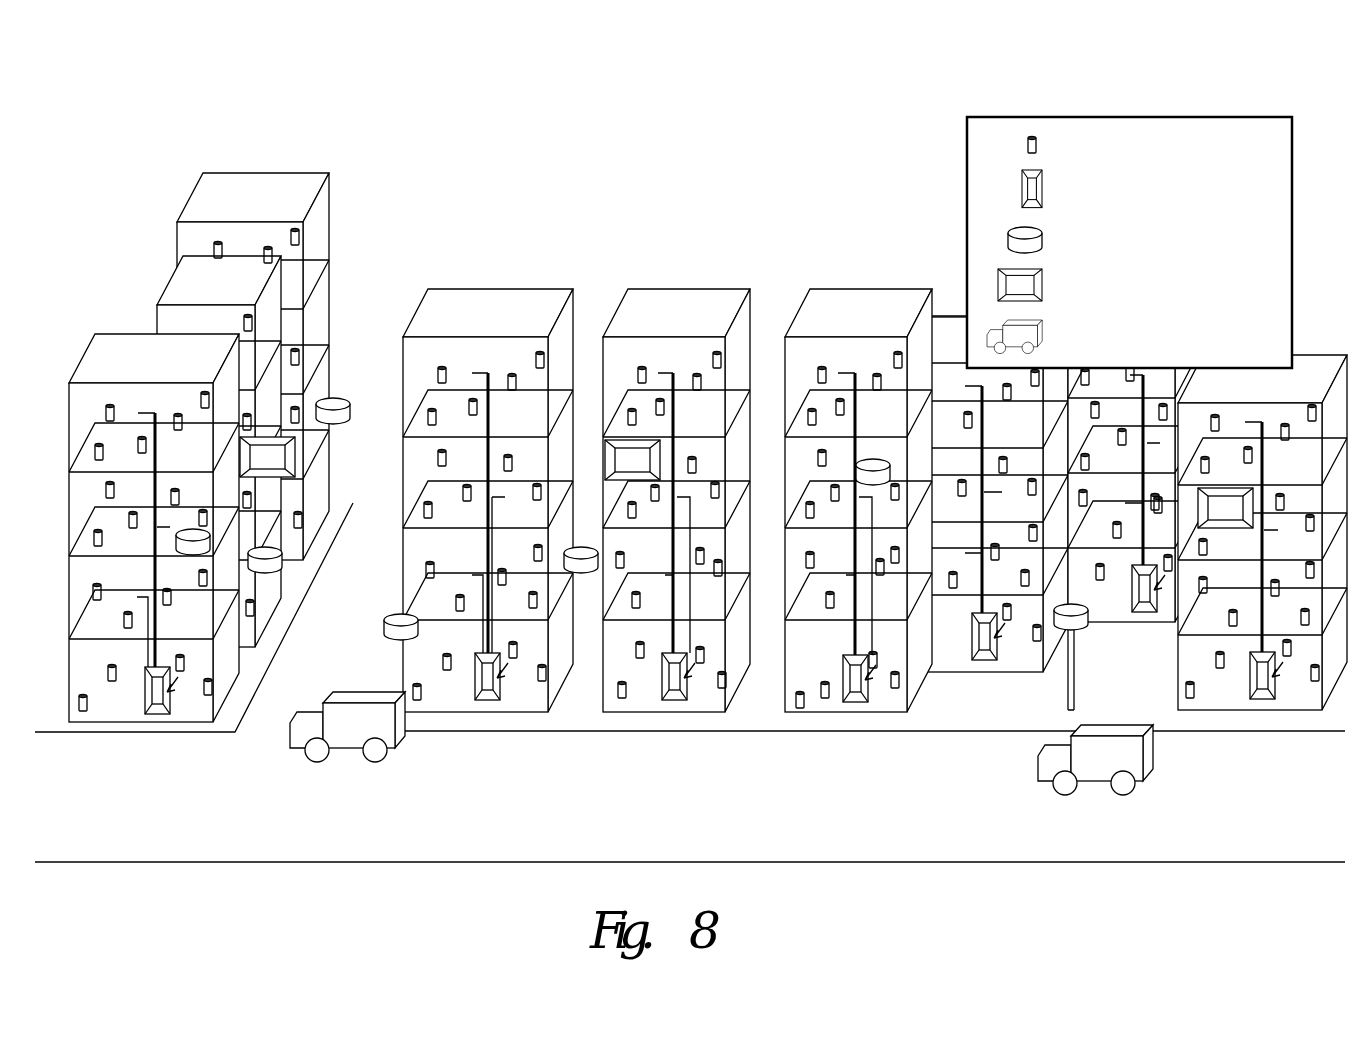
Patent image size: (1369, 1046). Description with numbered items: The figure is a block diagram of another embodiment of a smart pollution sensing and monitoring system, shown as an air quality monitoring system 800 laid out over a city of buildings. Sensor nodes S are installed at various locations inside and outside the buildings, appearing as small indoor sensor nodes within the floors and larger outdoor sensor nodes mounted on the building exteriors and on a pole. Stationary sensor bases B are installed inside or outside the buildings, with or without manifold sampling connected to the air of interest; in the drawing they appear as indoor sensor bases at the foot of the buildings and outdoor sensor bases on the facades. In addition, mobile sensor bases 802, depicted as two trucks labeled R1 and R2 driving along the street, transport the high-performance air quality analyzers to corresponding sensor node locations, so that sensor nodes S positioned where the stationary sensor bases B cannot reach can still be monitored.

The air quality monitoring system 800 is at (197, 88).
The mobile sensor base 802 is at (776, 744).
The sensor node S is at (337, 403).
The stationary sensor base B is at (620, 458).
The mobile sensor base vehicle R1 is at (1097, 775).
The mobile sensor base vehicle R2 is at (361, 726).